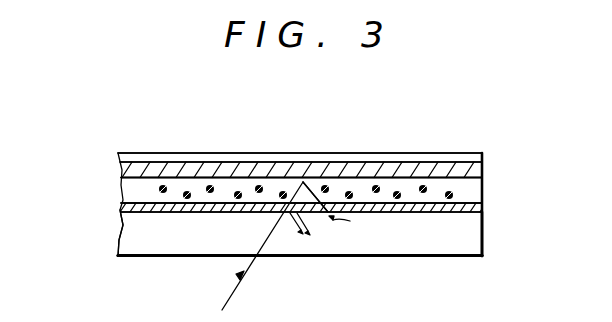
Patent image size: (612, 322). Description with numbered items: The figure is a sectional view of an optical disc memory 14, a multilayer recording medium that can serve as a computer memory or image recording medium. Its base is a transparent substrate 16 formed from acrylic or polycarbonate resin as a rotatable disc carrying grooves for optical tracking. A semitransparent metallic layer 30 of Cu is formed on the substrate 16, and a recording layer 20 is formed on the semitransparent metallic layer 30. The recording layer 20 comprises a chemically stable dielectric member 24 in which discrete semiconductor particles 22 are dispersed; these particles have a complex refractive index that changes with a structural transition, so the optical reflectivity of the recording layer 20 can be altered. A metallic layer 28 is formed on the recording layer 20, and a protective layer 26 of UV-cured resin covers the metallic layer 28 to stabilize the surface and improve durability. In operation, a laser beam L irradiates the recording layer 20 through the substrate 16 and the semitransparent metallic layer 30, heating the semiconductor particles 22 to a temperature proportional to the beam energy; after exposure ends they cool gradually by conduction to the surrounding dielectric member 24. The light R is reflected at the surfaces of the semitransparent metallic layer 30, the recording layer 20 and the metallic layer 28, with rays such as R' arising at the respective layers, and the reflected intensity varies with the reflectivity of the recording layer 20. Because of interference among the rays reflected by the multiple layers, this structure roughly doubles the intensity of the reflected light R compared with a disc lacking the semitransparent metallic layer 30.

The optical disc memory 14 is at (288, 144).
The protective layer 26 is at (422, 152).
The metallic layer 28 is at (475, 171).
The recording layer 20 is at (483, 196).
The semiconductor particles 22 is at (187, 195).
The dielectric member 24 is at (408, 197).
The semitransparent metallic layer 30 is at (480, 216).
The transparent substrate 16 is at (453, 247).
The laser beam L is at (240, 284).
The reflected light R is at (288, 235).
The reflected light R' is at (318, 233).